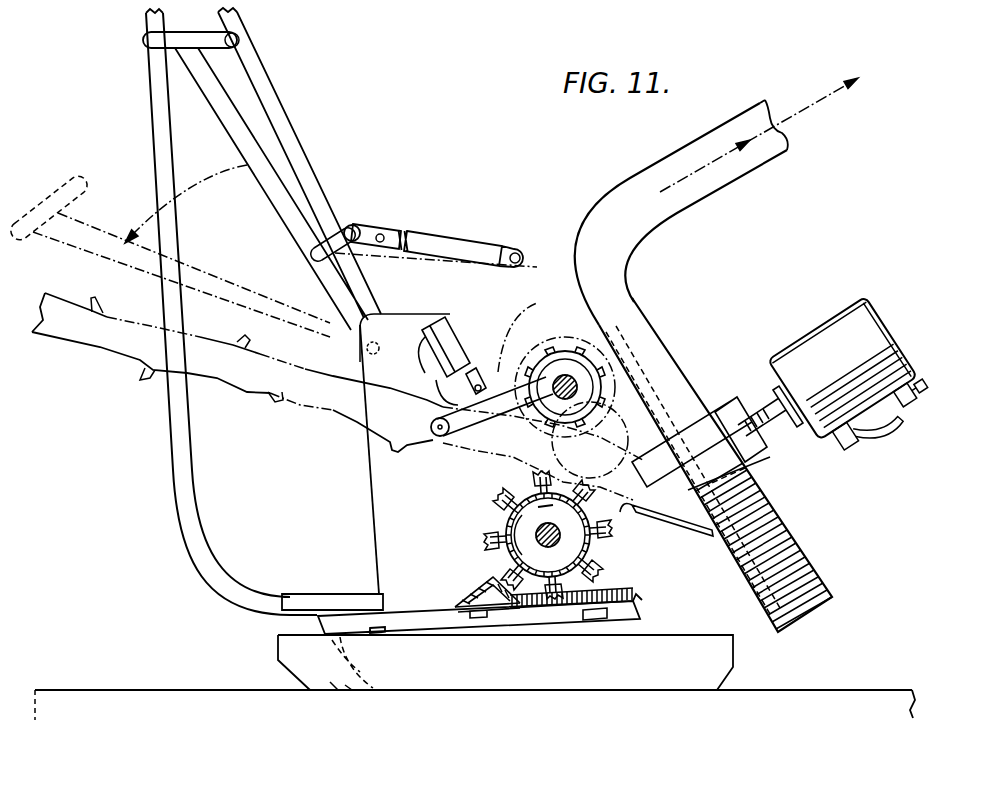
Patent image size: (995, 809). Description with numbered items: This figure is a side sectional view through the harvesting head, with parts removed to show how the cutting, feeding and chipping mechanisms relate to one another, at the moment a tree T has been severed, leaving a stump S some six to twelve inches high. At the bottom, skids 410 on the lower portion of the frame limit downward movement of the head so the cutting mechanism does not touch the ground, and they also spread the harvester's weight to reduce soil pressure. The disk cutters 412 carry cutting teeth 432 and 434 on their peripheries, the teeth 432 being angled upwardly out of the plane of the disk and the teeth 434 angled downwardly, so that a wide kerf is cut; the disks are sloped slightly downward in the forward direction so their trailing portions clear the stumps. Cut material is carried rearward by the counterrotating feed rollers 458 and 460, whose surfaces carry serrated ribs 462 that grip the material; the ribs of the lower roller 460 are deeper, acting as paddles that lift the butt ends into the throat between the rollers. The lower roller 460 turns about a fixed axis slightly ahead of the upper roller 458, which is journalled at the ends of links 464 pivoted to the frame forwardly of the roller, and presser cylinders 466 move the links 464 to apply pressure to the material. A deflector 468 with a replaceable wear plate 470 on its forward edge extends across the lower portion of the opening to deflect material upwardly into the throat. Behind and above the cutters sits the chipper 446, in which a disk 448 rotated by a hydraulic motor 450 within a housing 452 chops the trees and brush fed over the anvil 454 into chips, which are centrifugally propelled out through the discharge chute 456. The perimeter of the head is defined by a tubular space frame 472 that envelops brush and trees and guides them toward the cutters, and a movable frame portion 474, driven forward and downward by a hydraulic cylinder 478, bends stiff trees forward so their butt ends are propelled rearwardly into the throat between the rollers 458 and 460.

The skids 410 is at (715, 667).
The disk cutters 412 is at (616, 616).
The cutting teeth 432 is at (633, 606).
The cutting teeth 434 is at (587, 620).
The chipper 446 is at (822, 533).
The disk 448 is at (745, 468).
The hydraulic motor 450 is at (840, 323).
The housing 452 is at (808, 572).
The anvil 454 is at (702, 528).
The discharge chute 456 is at (710, 184).
The upper feed roller 458 is at (624, 352).
The lower feed roller 460 is at (575, 592).
The serrated ribs 462 is at (548, 330).
The links 464 is at (468, 427).
The presser cylinders 466 is at (372, 316).
The deflector 468 is at (490, 590).
The wear plate 470 is at (463, 607).
The tubular space frame 472 is at (150, 103).
The movable frame portion 474 is at (243, 145).
The hydraulic cylinder 478 is at (440, 238).
The stump S is at (337, 665).
The tree T is at (270, 395).